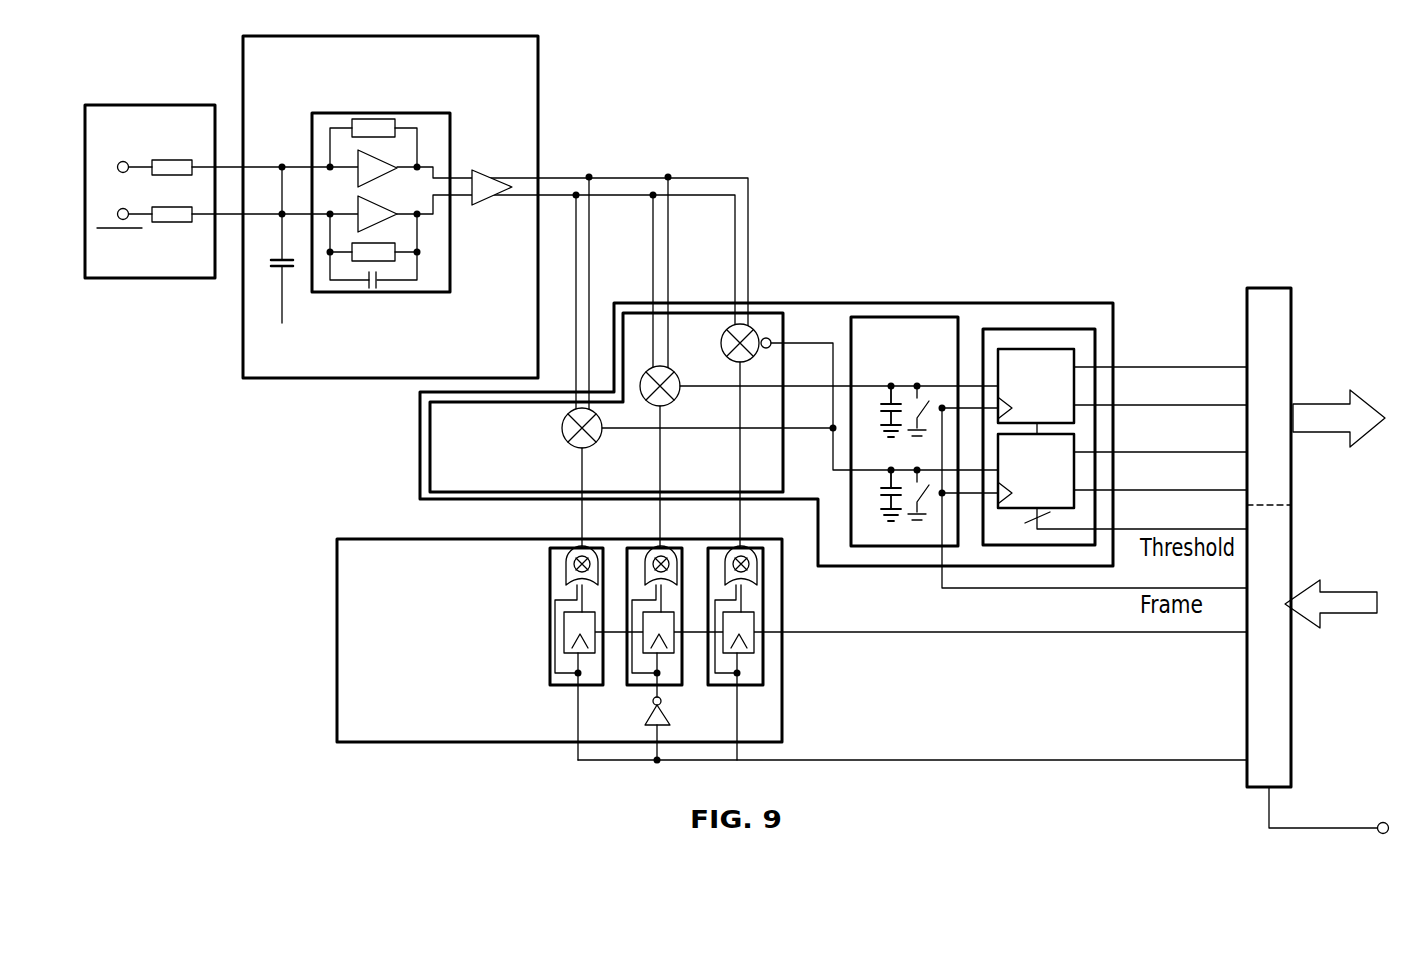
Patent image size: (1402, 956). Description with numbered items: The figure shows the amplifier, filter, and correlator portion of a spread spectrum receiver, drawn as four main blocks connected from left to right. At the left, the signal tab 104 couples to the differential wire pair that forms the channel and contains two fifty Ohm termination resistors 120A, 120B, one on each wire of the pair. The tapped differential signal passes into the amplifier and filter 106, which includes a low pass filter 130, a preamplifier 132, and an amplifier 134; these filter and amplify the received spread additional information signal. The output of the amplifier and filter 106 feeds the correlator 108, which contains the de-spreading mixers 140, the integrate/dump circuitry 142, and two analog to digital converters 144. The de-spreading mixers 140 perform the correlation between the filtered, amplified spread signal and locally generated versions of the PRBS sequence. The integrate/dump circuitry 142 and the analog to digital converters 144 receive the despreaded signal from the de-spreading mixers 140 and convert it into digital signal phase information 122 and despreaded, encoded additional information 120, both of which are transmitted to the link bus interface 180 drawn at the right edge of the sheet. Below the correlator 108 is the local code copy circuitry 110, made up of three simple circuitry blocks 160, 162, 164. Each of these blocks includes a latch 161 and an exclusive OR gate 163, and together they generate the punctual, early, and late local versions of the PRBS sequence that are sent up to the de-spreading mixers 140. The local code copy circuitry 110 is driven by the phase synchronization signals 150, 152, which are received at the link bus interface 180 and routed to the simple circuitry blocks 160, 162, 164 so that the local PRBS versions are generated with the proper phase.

The signal tab 104 is at (214, 228).
The amplifier and filter 106 is at (513, 92).
The correlator 108 is at (1098, 303).
The local code copy circuitry 110 is at (337, 672).
The termination resistor 120A is at (171, 160).
The termination resistor 120B is at (171, 223).
The despreaded, encoded additional information 120 is at (1171, 388).
The digital signal phase information 122 is at (1169, 471).
The low pass filter 130 is at (285, 325).
The preamplifier 132 is at (442, 138).
The amplifier 134 is at (493, 184).
The de-spreading mixers 140 is at (772, 316).
The integrate/dump circuitry 142 is at (903, 317).
The analog to digital converters 144 is at (1035, 329).
The phase synchronization signal 150 is at (1076, 651).
The phase synchronization signal 152 is at (1090, 781).
The simple circuitry block 160 is at (558, 633).
The latch 161 is at (565, 612).
The simple circuitry block 162 is at (632, 683).
The exclusive OR gate 163 is at (573, 562).
The simple circuitry block 164 is at (717, 683).
The link bus interface 180 is at (1270, 222).